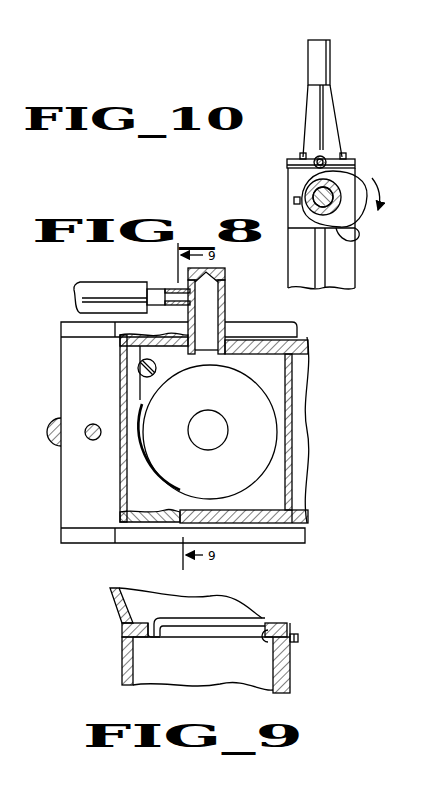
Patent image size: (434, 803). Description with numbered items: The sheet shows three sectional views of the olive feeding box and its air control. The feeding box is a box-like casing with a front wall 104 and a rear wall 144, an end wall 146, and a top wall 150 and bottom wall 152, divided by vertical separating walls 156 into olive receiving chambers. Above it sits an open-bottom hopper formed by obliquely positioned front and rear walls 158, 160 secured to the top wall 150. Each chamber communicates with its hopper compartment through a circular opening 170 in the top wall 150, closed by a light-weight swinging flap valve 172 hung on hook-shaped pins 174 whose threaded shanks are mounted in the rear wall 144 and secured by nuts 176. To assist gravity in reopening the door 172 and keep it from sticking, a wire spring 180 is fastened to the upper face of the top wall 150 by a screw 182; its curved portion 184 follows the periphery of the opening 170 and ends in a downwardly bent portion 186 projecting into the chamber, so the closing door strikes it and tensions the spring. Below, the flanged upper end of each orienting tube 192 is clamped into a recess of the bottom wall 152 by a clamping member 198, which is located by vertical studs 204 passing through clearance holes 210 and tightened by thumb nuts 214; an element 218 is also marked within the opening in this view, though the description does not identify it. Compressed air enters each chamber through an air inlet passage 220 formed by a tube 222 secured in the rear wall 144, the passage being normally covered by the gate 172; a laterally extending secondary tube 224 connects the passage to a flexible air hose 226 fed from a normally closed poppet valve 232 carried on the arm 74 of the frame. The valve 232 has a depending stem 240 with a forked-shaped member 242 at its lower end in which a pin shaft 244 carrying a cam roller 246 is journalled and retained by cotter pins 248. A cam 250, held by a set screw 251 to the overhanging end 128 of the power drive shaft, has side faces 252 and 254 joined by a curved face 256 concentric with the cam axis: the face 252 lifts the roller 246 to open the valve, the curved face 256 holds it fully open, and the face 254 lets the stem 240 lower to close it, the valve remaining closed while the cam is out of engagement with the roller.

In FIG. 10, the arm 74 is at (347, 275).
In FIG. 8, the front wall 104 is at (305, 518).
In FIG. 9, the front wall 104 is at (122, 670).
In FIG. 10, the overhanging end 128 is at (310, 191).
In FIG. 8, the rear wall 144 is at (303, 344).
In FIG. 9, the rear wall 144 is at (290, 665).
In FIG. 9, the end wall 146 is at (205, 683).
In FIG. 9, the top wall 150 is at (122, 630).
In FIG. 8, the bottom wall 152 is at (292, 447).
In FIG. 8, the vertical separating wall 156 is at (300, 470).
In FIG. 8, the front wall of hopper 158 is at (120, 517).
In FIG. 9, the front wall of hopper 158 is at (282, 624).
In FIG. 8, the rear wall of hopper 160 is at (123, 348).
In FIG. 9, the rear wall of hopper 160 is at (115, 600).
In FIG. 8, the circular opening 170 is at (152, 393).
In FIG. 9, the circular opening 170 is at (193, 630).
In FIG. 8, the flap valve 172 is at (237, 355).
In FIG. 9, the flap valve 172 is at (275, 655).
In FIG. 9, the hook-shaped pin 174 is at (298, 640).
In FIG. 9, the nut 176 is at (296, 633).
In FIG. 8, the wire spring 180 is at (142, 402).
In FIG. 9, the wire spring 180 is at (250, 618).
In FIG. 8, the screw 182 is at (150, 364).
In FIG. 9, the screw 182 is at (278, 620).
In FIG. 8, the curved portion 184 is at (166, 472).
In FIG. 9, the curved portion 184 is at (216, 614).
In FIG. 9, the downwardly bent portion 186 is at (157, 634).
In FIG. 8, the orienting tube 192 is at (224, 472).
In FIG. 8, the clamping member 198 is at (99, 475).
In FIG. 8, the vertical stud 204 is at (98, 421).
In FIG. 8, the clearance hole 210 is at (97, 439).
In FIG. 8, the thumb nut 214 is at (54, 428).
In FIG. 8, the hub 218 is at (220, 438).
In FIG. 8, the air inlet passage 220 is at (213, 296).
In FIG. 8, the tube 222 is at (219, 305).
In FIG. 8, the secondary tube 224 is at (163, 290).
In FIG. 8, the flexible air hose 226 is at (118, 283).
In FIG. 10, the poppet valve 232 is at (325, 52).
In FIG. 10, the valve stem 240 is at (327, 108).
In FIG. 10, the forked-shaped member 242 is at (314, 159).
In FIG. 10, the pin shaft 244 is at (327, 160).
In FIG. 10, the cam roller 246 is at (350, 163).
In FIG. 10, the cotter pin 248 is at (290, 165).
In FIG. 10, the cam 250 is at (356, 205).
In FIG. 10, the set screw 251 is at (294, 200).
In FIG. 10, the side face 252 is at (343, 234).
In FIG. 10, the side face 254 is at (386, 191).
In FIG. 10, the curved face 256 is at (352, 226).